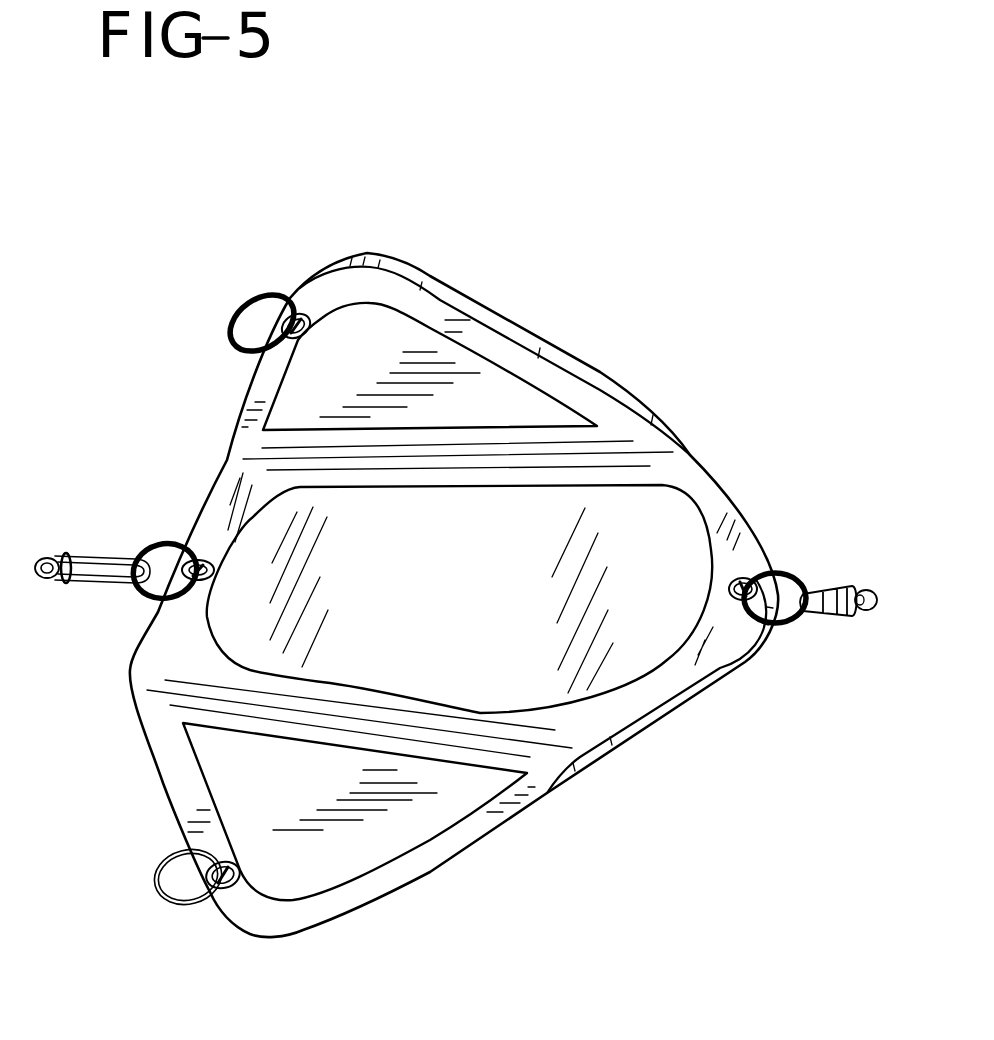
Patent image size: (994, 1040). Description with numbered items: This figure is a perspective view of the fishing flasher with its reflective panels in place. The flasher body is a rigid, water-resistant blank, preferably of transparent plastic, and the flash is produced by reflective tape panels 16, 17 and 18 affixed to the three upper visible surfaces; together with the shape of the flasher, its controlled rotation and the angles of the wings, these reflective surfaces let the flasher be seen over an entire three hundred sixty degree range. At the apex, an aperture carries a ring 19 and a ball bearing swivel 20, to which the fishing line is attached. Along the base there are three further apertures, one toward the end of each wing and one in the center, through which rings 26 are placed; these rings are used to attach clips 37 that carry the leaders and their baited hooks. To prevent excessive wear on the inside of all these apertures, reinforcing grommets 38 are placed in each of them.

The reflective tape panel 16 is at (368, 332).
The reflective tape panel 17 is at (657, 540).
The reflective tape panel 18 is at (380, 828).
The ring 19 is at (793, 568).
The ball bearing swivel 20 is at (838, 615).
The rings 26 is at (247, 297).
The clip 37 is at (42, 576).
The reinforcing grommet 38 is at (300, 338).